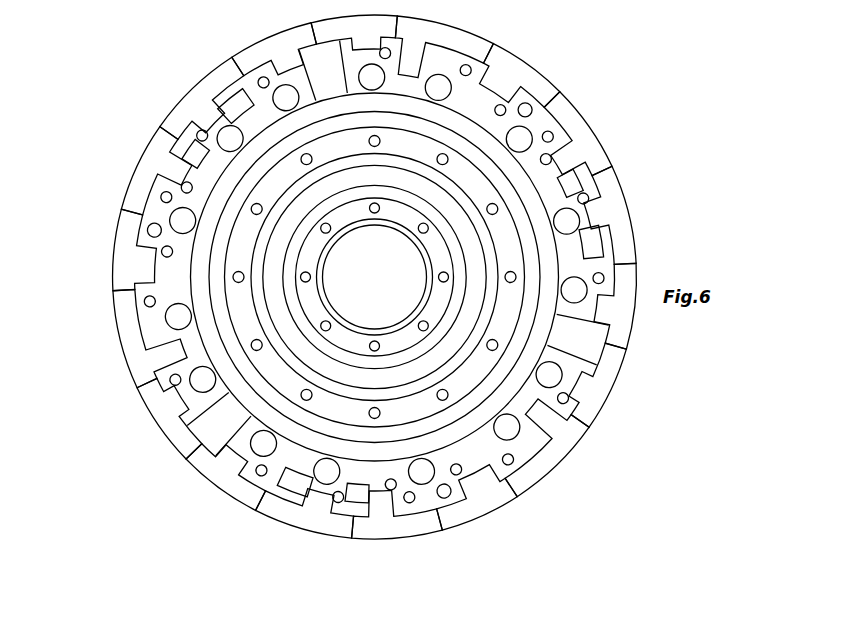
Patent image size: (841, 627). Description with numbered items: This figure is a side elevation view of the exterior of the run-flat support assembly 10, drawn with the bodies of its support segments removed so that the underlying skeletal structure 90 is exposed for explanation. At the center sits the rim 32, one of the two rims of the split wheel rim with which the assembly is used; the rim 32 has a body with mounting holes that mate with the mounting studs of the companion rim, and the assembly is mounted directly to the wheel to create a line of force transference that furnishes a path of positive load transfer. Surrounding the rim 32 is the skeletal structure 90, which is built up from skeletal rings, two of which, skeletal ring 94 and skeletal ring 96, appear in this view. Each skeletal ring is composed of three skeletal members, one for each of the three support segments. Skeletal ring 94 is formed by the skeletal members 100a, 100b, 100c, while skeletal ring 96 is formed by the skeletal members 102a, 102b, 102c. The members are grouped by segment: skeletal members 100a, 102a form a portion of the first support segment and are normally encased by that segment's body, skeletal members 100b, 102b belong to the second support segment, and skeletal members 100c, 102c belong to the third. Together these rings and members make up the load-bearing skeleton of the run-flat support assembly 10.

The run-flat support assembly 10 is at (612, 68).
The rim 32 is at (505, 163).
The skeletal structure 90 is at (640, 222).
The skeletal ring 94 is at (537, 70).
The skeletal ring 96 is at (480, 33).
The skeletal member 100a is at (195, 87).
The skeletal member 100b is at (593, 128).
The skeletal member 100c is at (207, 483).
The skeletal member 102a is at (155, 135).
The skeletal member 102b is at (610, 157).
The skeletal member 102c is at (532, 490).